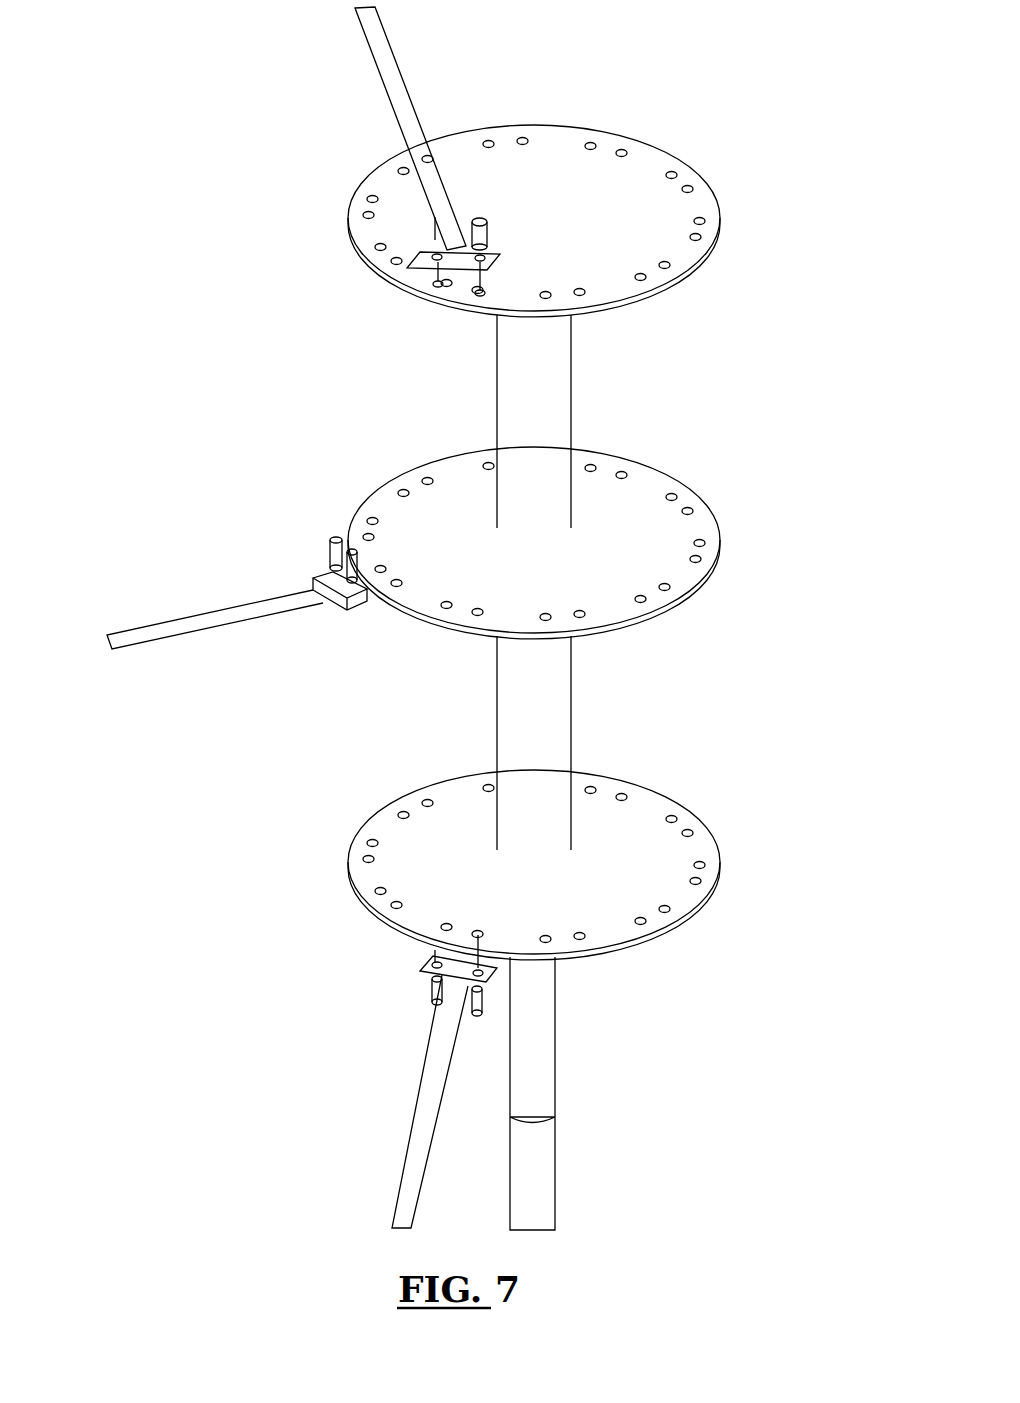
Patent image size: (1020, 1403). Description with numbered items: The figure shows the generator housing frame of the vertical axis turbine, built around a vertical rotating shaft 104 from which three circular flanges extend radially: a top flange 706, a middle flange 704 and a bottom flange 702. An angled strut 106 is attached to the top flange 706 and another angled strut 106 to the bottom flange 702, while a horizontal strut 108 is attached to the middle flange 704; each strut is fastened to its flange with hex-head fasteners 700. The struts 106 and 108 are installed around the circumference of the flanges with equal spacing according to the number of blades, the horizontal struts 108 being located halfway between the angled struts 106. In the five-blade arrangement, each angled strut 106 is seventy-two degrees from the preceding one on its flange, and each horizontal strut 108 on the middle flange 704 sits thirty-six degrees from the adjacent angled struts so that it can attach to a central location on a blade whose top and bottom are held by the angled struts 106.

The rotating shaft 104 is at (562, 1020).
The angled strut 106 is at (376, 98).
The horizontal strut 108 is at (222, 630).
The hex-head fastener 700 is at (456, 258).
The bottom flange 702 is at (702, 812).
The middle flange 704 is at (697, 488).
The top flange 706 is at (650, 135).